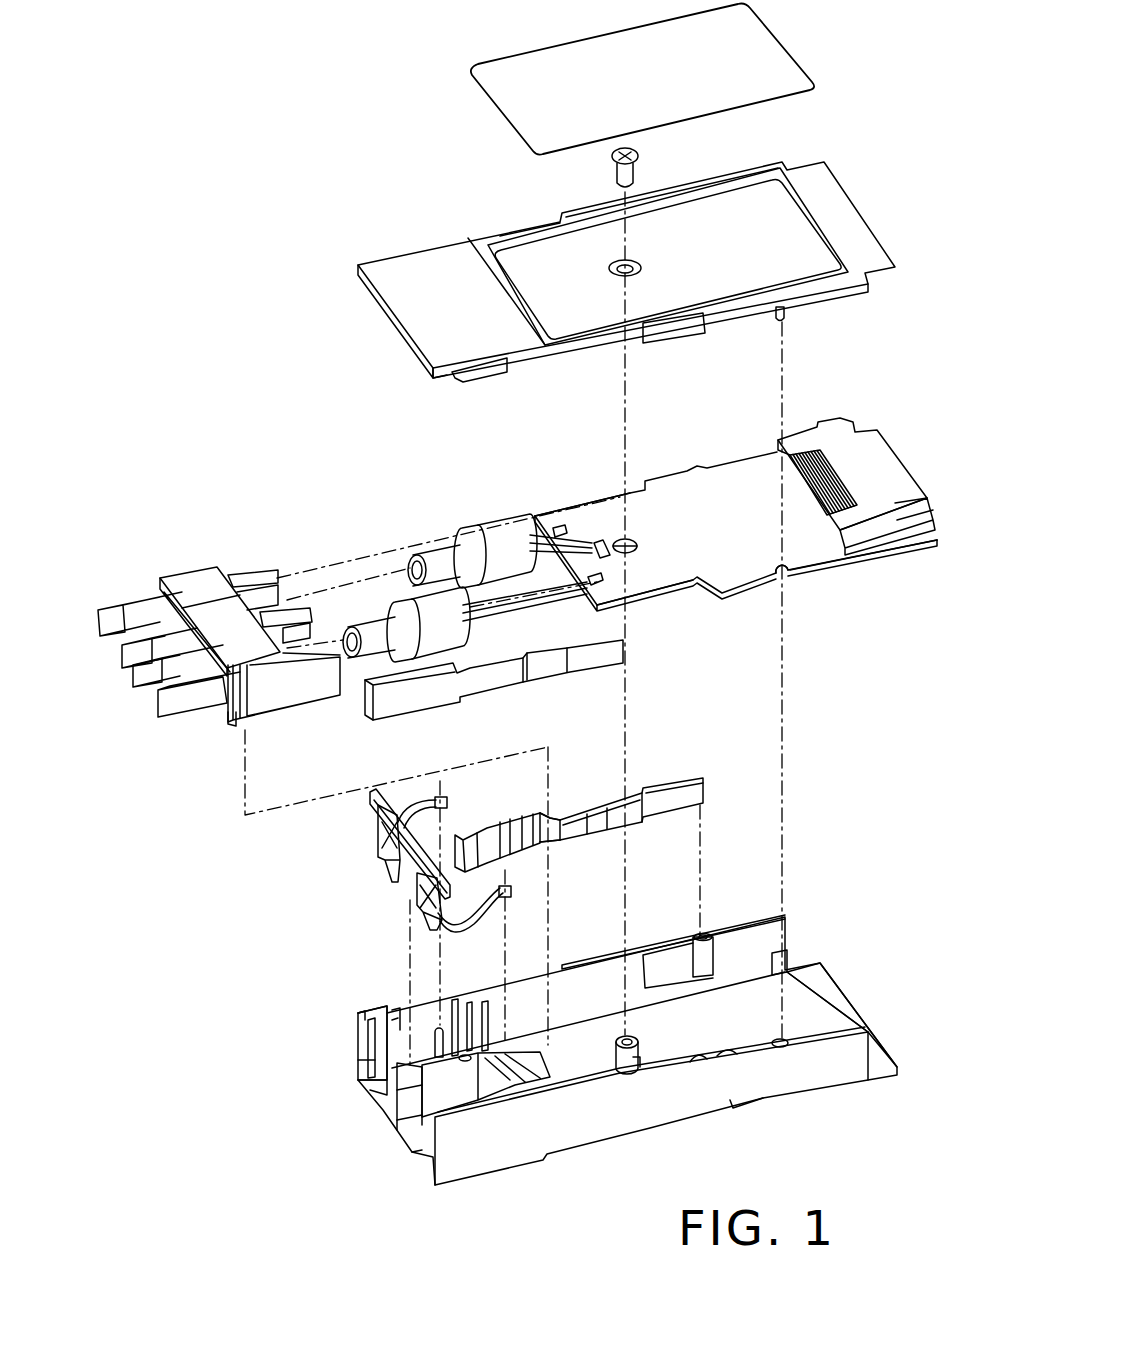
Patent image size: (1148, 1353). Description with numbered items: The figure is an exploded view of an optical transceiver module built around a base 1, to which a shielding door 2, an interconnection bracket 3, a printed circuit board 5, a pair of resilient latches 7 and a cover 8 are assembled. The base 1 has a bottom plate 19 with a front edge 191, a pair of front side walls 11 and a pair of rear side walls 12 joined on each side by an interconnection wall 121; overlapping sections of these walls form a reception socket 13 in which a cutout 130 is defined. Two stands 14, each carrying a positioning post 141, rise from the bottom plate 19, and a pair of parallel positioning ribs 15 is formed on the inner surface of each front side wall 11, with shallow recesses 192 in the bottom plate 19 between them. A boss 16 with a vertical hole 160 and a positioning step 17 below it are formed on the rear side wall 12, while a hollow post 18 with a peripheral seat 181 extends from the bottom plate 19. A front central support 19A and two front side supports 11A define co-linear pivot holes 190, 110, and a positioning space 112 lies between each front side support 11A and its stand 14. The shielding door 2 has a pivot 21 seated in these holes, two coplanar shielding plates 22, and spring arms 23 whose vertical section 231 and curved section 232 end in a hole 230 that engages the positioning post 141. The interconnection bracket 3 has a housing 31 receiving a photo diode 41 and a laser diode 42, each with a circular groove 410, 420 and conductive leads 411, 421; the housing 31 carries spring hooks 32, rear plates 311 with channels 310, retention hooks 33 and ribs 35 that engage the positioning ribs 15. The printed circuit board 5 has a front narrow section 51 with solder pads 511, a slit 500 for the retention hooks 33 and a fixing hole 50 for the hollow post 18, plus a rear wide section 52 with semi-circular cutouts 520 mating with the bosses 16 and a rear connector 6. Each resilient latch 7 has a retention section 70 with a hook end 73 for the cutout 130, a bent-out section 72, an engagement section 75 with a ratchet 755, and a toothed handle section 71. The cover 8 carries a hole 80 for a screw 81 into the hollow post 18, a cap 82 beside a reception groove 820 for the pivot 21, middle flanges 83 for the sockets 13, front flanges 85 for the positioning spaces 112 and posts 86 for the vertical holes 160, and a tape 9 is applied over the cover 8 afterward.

The base 1 is at (589, 1039).
The front side wall 11 is at (458, 1160).
The pivot hole 110 is at (365, 1017).
The front side support 11A is at (383, 1040).
The positioning space 112 is at (383, 1012).
The rear side wall 12 is at (797, 1063).
The interconnection wall 121 is at (740, 1060).
The reception socket 13 is at (698, 1067).
The cutout 130 is at (623, 955).
The stand 14 is at (346, 1059).
The positioning post 141 is at (400, 1027).
The positioning rib 15 is at (490, 1012).
The boss 16 is at (762, 915).
The vertical hole 160 is at (704, 933).
The positioning step 17 is at (665, 972).
The hollow post 18 is at (651, 1097).
The peripheral seat 181 is at (672, 1080).
The bottom plate 19 is at (802, 1013).
The pivot hole 190 is at (380, 1040).
The front central support 19A is at (415, 1087).
The front edge 191 is at (397, 1110).
The shallow recess 192 is at (533, 1063).
The shielding door 2 is at (407, 850).
The pivot 21 is at (383, 798).
The shielding plate 22 is at (373, 850).
The spring arm 23 is at (457, 774).
The hole 230 is at (441, 797).
The vertical section 231 is at (432, 927).
The curved section 232 is at (450, 925).
The interconnection bracket 3 is at (216, 629).
The housing 31 is at (253, 629).
The channel 310 is at (290, 580).
The rear plate 311 is at (318, 672).
The spring hook 32 is at (113, 620).
The retention hook 33 is at (308, 600).
The rib 35 is at (233, 722).
The photo diode 41 is at (460, 522).
The circular groove 410 is at (473, 533).
The conductive leads 411 is at (538, 523).
The laser diode 42 is at (440, 567).
The circular groove 420 is at (392, 608).
The conductive leads 421 is at (478, 618).
The printed circuit board 5 is at (740, 594).
The fixing hole 50 is at (633, 541).
The slit 500 is at (595, 543).
The front narrow section 51 is at (645, 597).
The solder pad 511 is at (605, 580).
The rear wide section 52 is at (677, 490).
The semi-circular cutout 520 is at (787, 580).
The rear connector 6 is at (902, 456).
The resilient latch 7 is at (566, 765).
The retention section 70 is at (603, 795).
The handle section 71 is at (540, 848).
The bent-out section 72 is at (637, 793).
The hook end 73 is at (624, 650).
The engagement section 75 is at (603, 825).
The ratchet 755 is at (560, 843).
The cover 8 is at (890, 249).
The hole 80 is at (620, 266).
The screw 81 is at (638, 170).
The cap 82 is at (805, 232).
The reception groove 820 is at (447, 374).
The middle flange 83 is at (682, 334).
The front flange 85 is at (498, 374).
The post 86 is at (785, 318).
The tape 9 is at (785, 55).